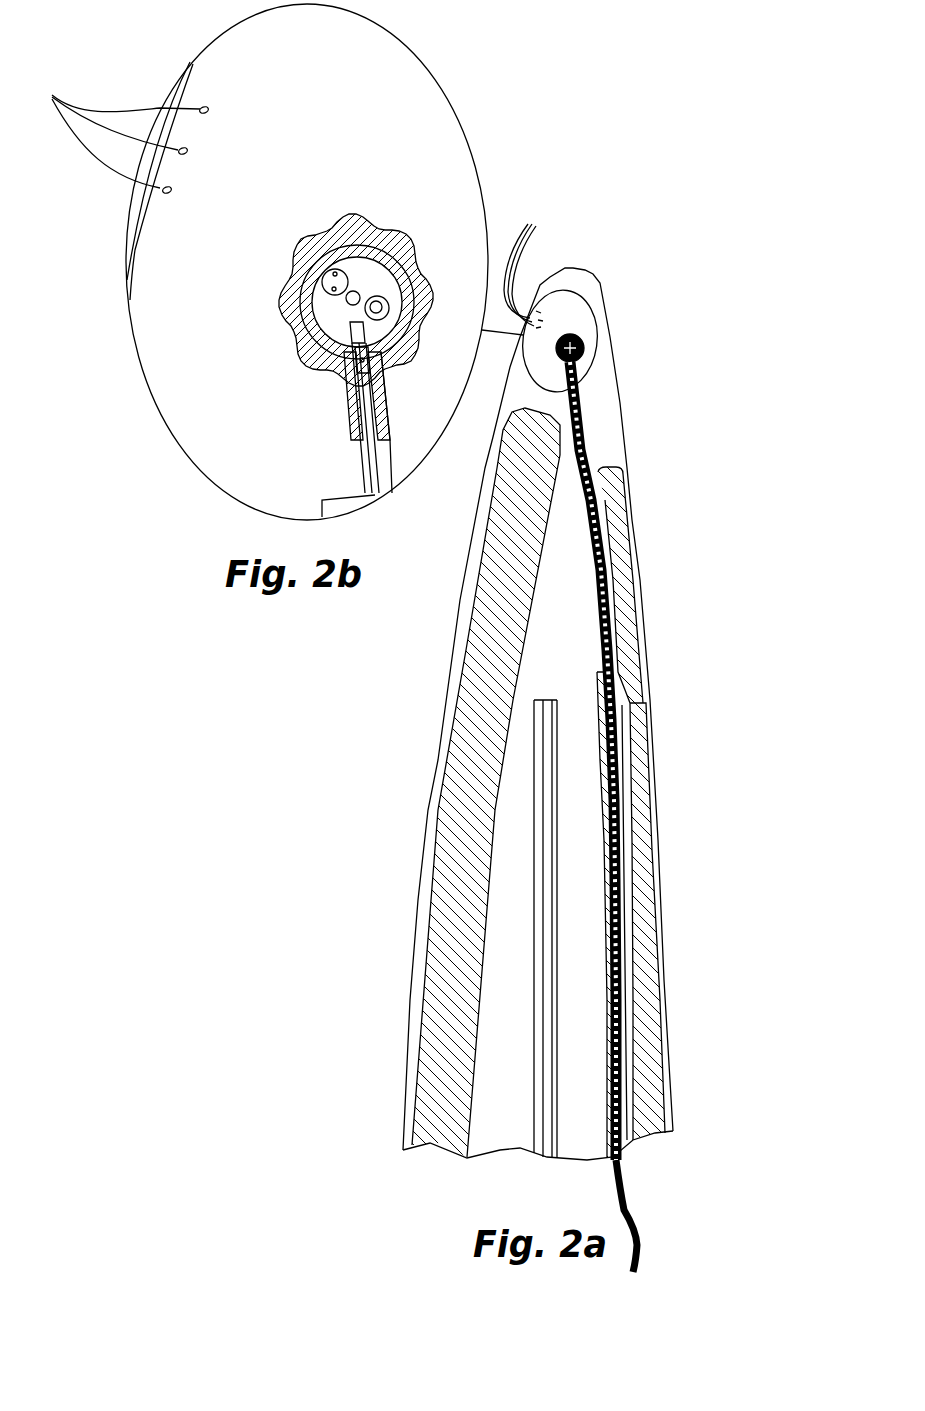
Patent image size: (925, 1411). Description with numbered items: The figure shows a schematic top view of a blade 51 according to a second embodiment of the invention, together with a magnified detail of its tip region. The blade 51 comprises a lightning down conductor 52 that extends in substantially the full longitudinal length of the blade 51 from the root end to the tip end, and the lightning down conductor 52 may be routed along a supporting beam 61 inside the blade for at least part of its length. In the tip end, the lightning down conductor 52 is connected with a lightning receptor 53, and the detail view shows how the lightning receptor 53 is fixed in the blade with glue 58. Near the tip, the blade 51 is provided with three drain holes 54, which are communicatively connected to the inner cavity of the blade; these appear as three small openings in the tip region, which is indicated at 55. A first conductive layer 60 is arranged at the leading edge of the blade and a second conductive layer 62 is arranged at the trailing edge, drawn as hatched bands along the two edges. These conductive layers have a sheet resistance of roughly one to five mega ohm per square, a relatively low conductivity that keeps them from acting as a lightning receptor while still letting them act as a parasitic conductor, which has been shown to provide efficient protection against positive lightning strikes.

In FIG. 2a, the blade 51 is at (679, 241).
In FIG. 2a, the lightning down conductor 52 is at (602, 605).
In FIG. 2a, the lightning receptor 53 is at (582, 342).
In FIG. 2b, the lightning receptor 53 is at (333, 308).
In FIG. 2a, the drain holes 54 is at (531, 264).
In FIG. 2b, the drain holes 54 is at (118, 133).
In FIG. 2a, the tip 55 is at (603, 405).
In FIG. 2b, the glue 58 is at (413, 258).
In FIG. 2a, the first conductive layer 60 is at (645, 823).
In FIG. 2a, the supporting beam 61 is at (613, 930).
In FIG. 2a, the second conductive layer 62 is at (468, 788).